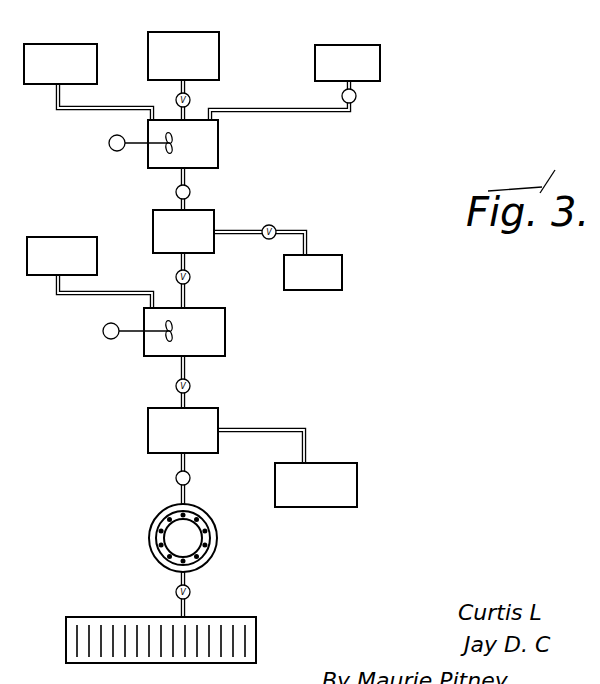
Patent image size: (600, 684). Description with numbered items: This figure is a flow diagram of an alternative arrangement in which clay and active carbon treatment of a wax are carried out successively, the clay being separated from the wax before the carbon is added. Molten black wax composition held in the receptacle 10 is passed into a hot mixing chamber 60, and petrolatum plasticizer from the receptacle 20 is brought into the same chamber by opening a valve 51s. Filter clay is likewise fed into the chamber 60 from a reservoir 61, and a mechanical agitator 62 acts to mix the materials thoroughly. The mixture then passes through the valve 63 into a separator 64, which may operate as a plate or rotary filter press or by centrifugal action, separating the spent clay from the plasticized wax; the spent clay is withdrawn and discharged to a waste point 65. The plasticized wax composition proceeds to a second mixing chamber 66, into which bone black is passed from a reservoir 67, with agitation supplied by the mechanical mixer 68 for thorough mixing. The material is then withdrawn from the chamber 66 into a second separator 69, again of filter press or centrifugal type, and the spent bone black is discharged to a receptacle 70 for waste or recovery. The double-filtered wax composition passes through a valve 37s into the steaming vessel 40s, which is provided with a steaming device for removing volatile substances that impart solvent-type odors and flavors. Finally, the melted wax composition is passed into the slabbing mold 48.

The receptacle 10 is at (205, 42).
The receptacle 20 is at (363, 53).
The valve 51s is at (357, 97).
The hot mixing chamber 60 is at (210, 155).
The reservoir 61 is at (35, 77).
The mechanical agitator 62 is at (111, 150).
The valve 63 is at (191, 192).
The separator 64 is at (158, 218).
The waste point 65 is at (325, 268).
The second mixing chamber 66 is at (215, 337).
The reservoir 67 is at (55, 241).
The mechanical mixer 68 is at (110, 339).
The second separator 69 is at (200, 420).
The receptacle 70 is at (340, 467).
The valve 37s is at (191, 478).
The steaming vessel 40s is at (216, 541).
The slabbing mold 48 is at (248, 625).